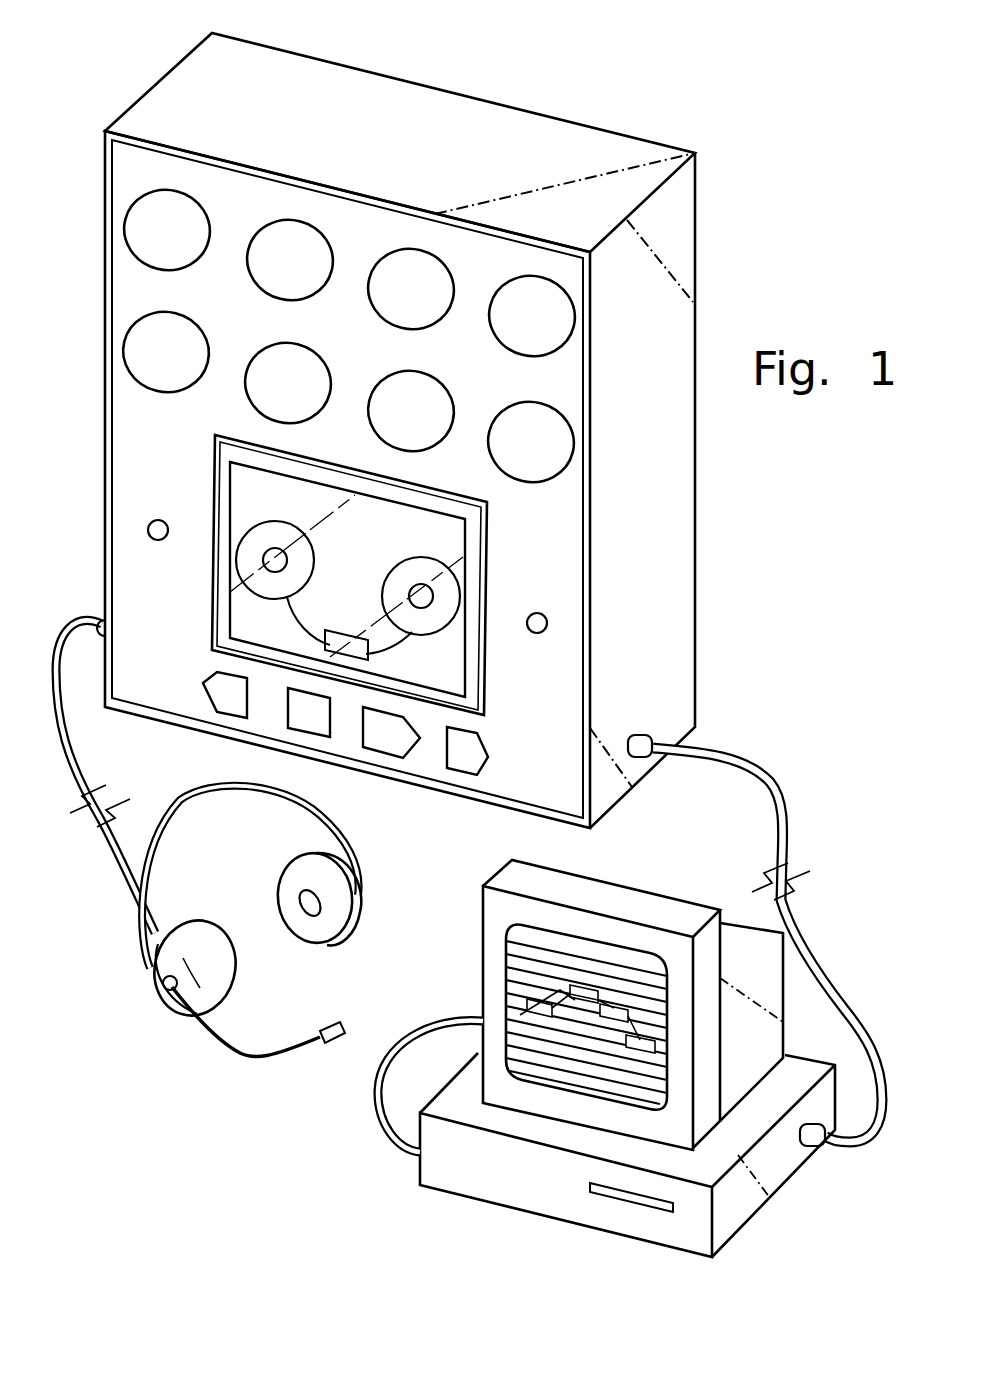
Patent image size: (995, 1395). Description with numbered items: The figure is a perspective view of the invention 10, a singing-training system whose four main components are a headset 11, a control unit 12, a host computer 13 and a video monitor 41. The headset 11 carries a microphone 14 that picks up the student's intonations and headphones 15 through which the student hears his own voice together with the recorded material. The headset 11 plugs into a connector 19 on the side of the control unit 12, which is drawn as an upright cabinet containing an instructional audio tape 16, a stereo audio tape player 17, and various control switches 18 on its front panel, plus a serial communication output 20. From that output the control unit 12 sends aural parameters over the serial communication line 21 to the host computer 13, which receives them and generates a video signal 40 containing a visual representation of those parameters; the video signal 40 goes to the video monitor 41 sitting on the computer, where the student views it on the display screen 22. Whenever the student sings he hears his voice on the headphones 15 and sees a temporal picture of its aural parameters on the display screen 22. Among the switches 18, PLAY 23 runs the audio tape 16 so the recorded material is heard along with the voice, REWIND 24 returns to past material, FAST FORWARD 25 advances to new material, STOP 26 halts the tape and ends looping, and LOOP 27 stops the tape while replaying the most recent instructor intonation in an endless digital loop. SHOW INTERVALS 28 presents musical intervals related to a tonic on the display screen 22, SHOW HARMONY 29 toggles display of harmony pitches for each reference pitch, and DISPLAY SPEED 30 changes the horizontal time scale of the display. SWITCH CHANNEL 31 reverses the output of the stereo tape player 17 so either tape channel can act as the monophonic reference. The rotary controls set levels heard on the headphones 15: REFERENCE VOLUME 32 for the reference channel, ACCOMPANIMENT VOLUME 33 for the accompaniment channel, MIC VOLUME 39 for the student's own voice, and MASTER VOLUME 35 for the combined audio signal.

The invention 10 is at (168, 1132).
The headset 11 is at (190, 812).
The control unit 12 is at (150, 80).
The host computer 13 is at (405, 1165).
The microphone 14 is at (342, 1027).
The headphones 15 is at (277, 892).
The instructional audio tape 16 is at (314, 555).
The stereo audio tape player 17 is at (316, 575).
The control switches 18 is at (364, 234).
The connector 19 is at (97, 618).
The serial communication output 20 is at (645, 735).
The serial communication line 21 is at (787, 793).
The display screen 22 is at (514, 996).
The PLAY switch 23 is at (382, 758).
The REWIND switch 24 is at (224, 714).
The FAST FORWARD switch 25 is at (458, 776).
The STOP switch 26 is at (305, 736).
The LOOP switch 27 is at (172, 391).
The SHOW INTERVALS switch 28 is at (263, 348).
The SHOW HARMONY switch 29 is at (447, 394).
The DISPLAY SPEED control 30 is at (522, 481).
The SWITCH CHANNEL switch 31 is at (160, 520).
The REFERENCE VOLUME control 32 is at (208, 226).
The ACCOMPANIMENT VOLUME control 33 is at (264, 290).
The MASTER VOLUME control 35 is at (497, 298).
The MIC VOLUME control 39 is at (385, 317).
The video signal 40 is at (374, 1093).
The video monitor 41 is at (472, 918).